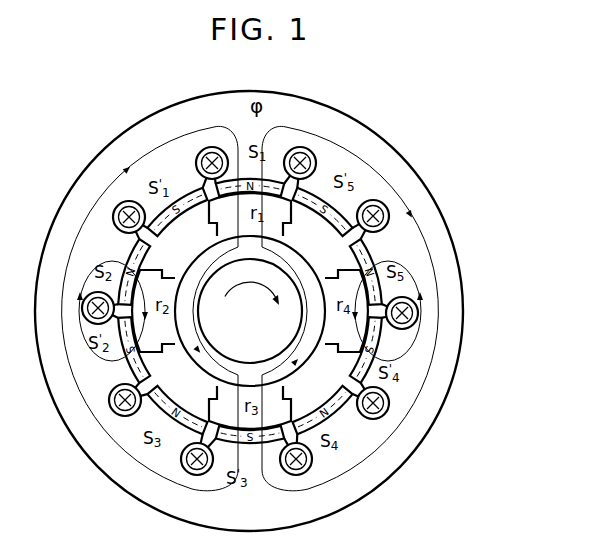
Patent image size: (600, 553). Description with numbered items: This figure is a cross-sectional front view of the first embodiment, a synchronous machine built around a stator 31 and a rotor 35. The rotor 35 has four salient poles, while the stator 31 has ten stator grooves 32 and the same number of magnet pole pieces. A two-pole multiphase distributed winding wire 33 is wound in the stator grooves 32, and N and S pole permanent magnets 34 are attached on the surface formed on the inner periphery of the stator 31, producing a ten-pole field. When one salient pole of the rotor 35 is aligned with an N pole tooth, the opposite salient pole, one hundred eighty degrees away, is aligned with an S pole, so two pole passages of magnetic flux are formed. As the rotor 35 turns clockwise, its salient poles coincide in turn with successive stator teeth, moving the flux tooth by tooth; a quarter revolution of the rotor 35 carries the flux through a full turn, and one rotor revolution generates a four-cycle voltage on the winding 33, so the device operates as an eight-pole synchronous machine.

The stator 31 is at (372, 143).
The stator grooves 32 is at (413, 326).
The multiphase distributed winding wire 33 is at (385, 414).
The permanent magnets 34 is at (342, 212).
The rotor 35 is at (380, 293).